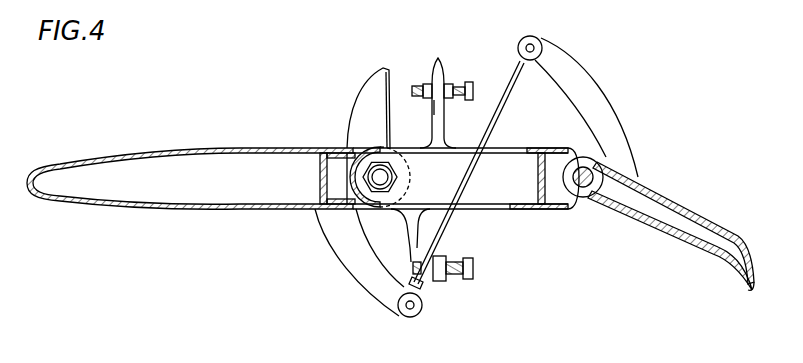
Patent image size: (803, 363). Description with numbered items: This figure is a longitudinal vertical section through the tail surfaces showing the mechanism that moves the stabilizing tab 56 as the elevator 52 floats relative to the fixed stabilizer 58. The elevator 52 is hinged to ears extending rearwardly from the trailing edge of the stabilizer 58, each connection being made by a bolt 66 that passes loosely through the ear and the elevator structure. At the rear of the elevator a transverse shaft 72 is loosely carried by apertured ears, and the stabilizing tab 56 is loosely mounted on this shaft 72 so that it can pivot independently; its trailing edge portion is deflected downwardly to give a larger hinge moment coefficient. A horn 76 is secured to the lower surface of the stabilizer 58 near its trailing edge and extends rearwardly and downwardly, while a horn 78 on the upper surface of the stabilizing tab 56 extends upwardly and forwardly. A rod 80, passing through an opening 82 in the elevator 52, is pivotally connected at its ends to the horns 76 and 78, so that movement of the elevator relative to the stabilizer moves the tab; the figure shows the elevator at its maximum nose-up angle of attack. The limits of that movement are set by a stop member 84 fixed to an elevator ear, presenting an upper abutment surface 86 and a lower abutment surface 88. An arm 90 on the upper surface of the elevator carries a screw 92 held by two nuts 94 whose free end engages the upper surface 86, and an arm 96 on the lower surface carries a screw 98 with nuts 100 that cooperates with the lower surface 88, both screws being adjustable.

The elevator 52 is at (532, 209).
The stabilizing tab 56 is at (697, 213).
The fixed stabilizer 58 is at (243, 148).
The bolt 66 is at (394, 164).
The transverse shaft 72 is at (590, 197).
The horn 76 is at (367, 280).
The horn 78 is at (598, 92).
The rod 80 is at (509, 92).
The opening 82 is at (446, 148).
The stop member 84 is at (362, 100).
The upper abutment surface 86 is at (391, 74).
The lower abutment surface 88 is at (413, 250).
The arm 90 is at (432, 107).
The screw 92 is at (470, 81).
The nuts 94 is at (439, 68).
The arm 96 is at (447, 246).
The screw 98 is at (472, 281).
The nuts 100 is at (433, 288).